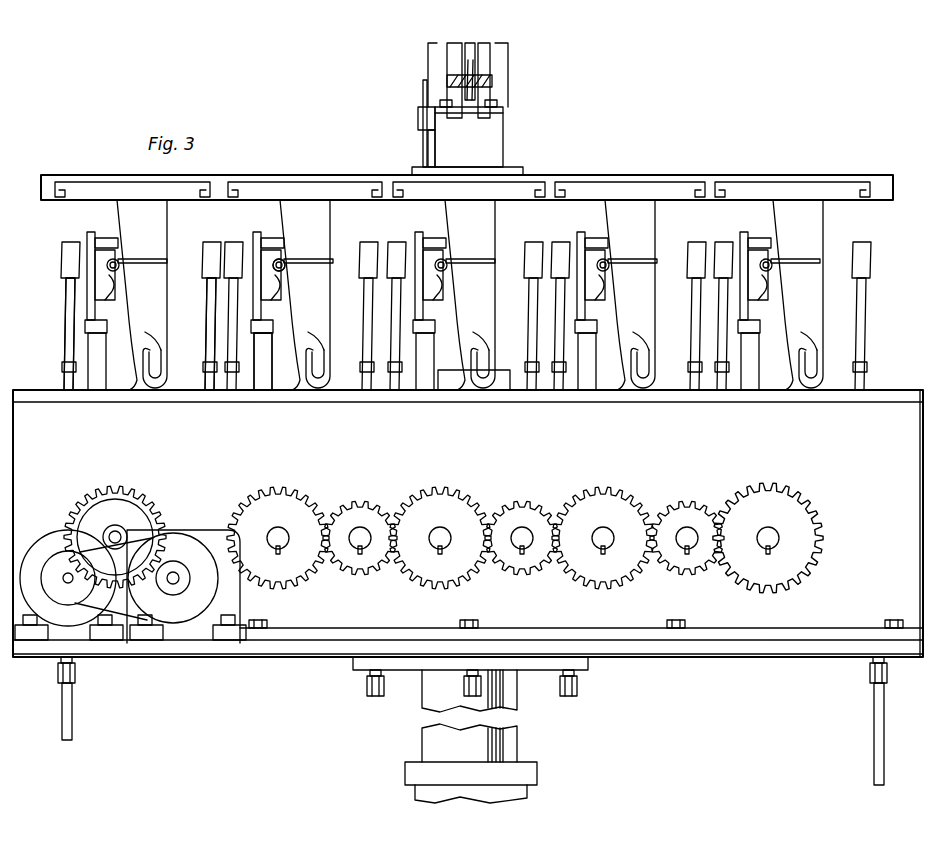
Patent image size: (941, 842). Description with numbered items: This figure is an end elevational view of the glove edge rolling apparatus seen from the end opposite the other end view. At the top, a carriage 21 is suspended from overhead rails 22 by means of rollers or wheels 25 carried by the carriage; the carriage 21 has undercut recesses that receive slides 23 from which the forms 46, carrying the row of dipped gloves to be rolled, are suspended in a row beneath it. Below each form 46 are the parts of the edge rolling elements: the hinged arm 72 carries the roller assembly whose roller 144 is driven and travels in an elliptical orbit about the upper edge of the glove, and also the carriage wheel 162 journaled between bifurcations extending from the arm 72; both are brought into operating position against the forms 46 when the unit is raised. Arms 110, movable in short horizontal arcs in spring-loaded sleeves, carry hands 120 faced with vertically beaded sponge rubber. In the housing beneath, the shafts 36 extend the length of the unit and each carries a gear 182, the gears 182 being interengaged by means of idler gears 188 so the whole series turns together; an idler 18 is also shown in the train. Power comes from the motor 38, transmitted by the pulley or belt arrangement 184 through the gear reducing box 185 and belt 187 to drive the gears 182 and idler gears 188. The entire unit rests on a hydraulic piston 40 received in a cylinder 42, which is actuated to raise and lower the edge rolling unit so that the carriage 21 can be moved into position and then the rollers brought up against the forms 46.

The carriage 21 is at (660, 178).
The overhead rails 22 is at (492, 80).
The slides 23 is at (92, 190).
The wheels 25 is at (482, 58).
The forms 46 is at (158, 233).
The carriage wheel 162 is at (108, 245).
The roller 144 is at (285, 268).
The arm 72 is at (259, 370).
The hands 120 is at (73, 255).
The arms 110 is at (68, 300).
The pulley arrangement 184 is at (82, 552).
The shaft 36 is at (120, 535).
The gear reducing box 185 is at (200, 625).
The belt 187 is at (153, 528).
The motor 38 is at (208, 580).
The gear 182 is at (118, 500).
The idler gears 188 is at (200, 523).
The idler gear 18 is at (690, 560).
The hydraulic piston 40 is at (508, 748).
The cylinder 42 is at (530, 779).